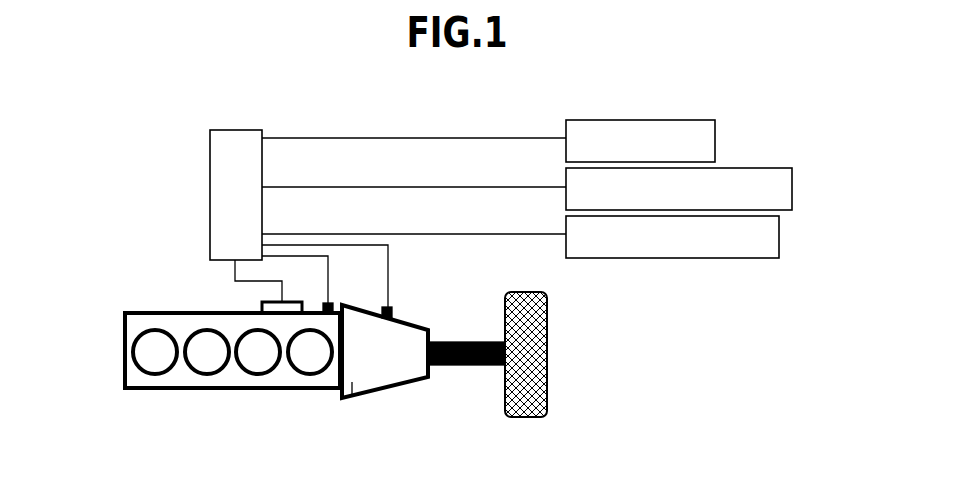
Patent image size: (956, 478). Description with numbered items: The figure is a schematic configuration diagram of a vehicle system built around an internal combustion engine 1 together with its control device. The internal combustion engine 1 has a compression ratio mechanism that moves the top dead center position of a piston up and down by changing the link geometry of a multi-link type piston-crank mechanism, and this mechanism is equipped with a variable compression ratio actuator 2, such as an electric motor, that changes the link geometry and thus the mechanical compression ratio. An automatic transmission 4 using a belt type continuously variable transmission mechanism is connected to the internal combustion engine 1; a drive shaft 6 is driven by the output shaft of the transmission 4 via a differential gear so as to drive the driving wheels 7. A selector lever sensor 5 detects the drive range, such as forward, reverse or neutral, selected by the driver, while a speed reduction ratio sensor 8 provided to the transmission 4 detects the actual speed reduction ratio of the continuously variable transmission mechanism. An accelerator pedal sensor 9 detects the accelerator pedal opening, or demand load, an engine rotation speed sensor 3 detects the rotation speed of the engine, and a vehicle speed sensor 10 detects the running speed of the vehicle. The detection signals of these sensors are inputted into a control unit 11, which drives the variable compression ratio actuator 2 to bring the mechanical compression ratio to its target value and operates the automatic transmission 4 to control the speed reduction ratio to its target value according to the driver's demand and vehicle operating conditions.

The internal combustion engine 1 is at (138, 325).
The variable compression ratio actuator 2 is at (262, 310).
The engine rotation speed sensor 3 is at (330, 304).
The automatic transmission 4 is at (352, 397).
The selector lever sensor 5 is at (772, 228).
The drive shaft 6 is at (464, 366).
The driving wheels 7 is at (545, 352).
The speed reduction ratio sensor 8 is at (393, 312).
The accelerator pedal sensor 9 is at (785, 180).
The vehicle speed sensor 10 is at (717, 141).
The control unit 11 is at (226, 174).